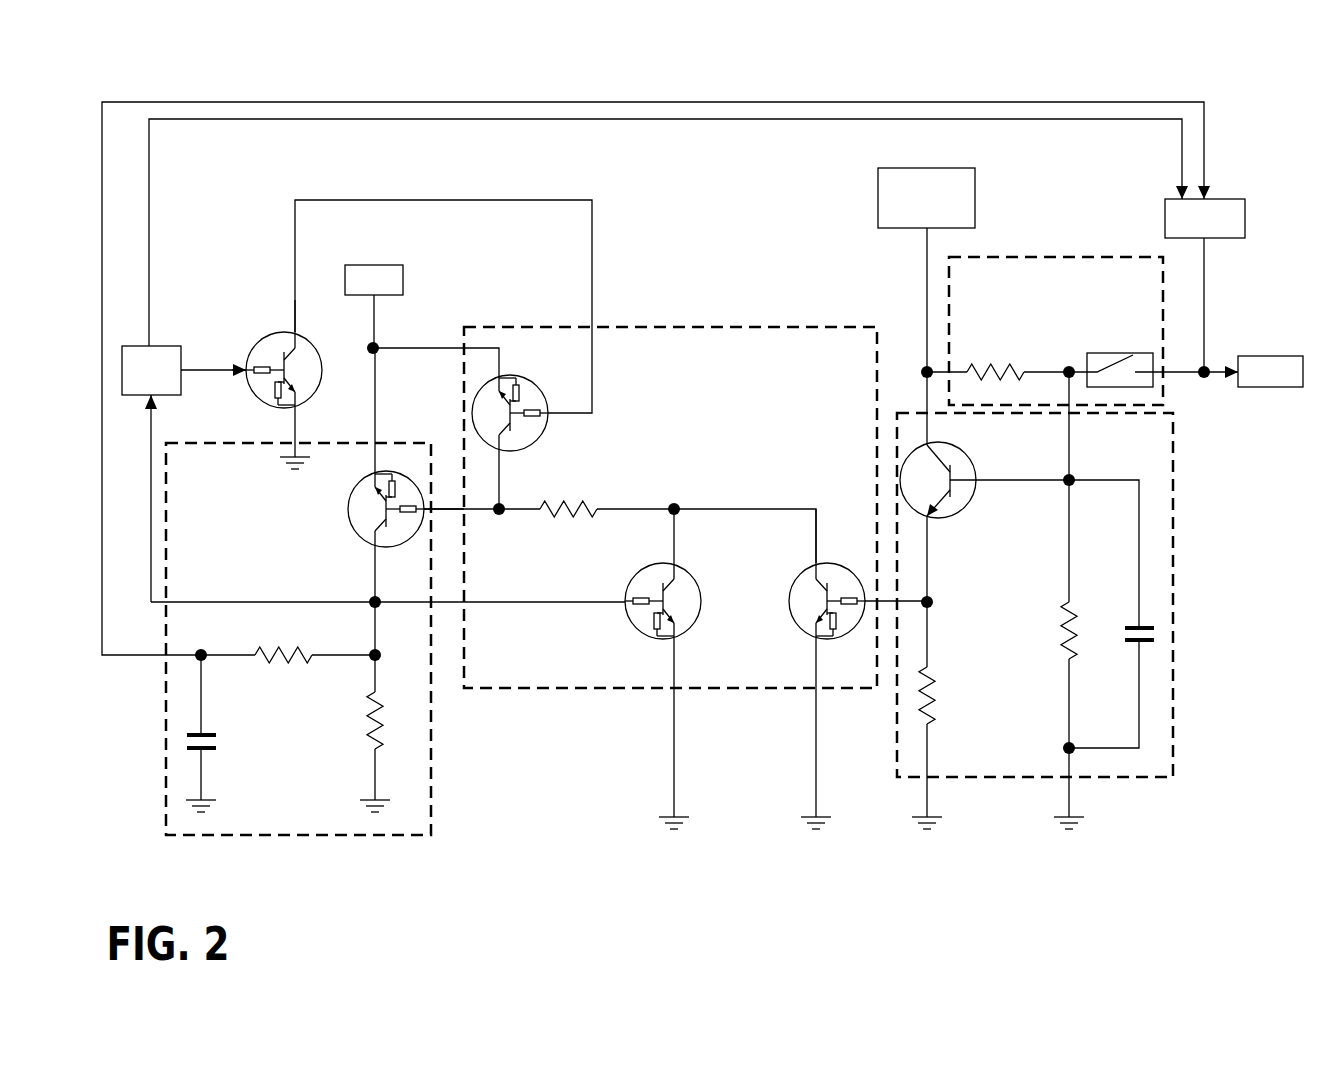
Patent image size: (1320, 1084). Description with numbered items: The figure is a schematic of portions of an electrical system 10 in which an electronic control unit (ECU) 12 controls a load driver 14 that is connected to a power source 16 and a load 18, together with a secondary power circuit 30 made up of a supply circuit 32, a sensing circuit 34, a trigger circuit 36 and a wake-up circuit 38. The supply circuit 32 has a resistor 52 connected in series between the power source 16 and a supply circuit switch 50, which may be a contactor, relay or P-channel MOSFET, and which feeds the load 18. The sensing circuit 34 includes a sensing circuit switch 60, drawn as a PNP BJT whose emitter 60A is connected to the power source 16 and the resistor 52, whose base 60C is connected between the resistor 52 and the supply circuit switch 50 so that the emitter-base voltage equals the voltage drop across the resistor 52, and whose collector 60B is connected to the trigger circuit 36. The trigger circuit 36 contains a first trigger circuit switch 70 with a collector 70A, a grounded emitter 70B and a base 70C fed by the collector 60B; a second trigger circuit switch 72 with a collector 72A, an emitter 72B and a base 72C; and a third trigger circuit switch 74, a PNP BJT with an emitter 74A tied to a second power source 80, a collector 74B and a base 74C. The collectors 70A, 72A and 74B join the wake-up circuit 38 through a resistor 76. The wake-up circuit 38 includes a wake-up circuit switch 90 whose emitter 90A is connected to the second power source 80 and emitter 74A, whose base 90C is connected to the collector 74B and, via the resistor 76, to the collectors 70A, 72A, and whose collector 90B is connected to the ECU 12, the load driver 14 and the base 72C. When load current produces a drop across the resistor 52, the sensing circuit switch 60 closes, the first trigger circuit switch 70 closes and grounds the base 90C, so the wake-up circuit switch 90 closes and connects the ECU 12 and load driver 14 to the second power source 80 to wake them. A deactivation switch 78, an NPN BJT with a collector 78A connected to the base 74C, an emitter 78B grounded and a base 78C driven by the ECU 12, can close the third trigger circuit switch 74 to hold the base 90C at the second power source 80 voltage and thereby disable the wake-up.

The electrical system 10 is at (178, 85).
The electronic control unit 12 is at (158, 345).
The load driver 14 is at (1228, 199).
The power source 16 is at (905, 168).
The load 18 is at (1262, 356).
The secondary power circuit 30 is at (1013, 830).
The supply circuit 32 is at (1003, 253).
The sensing circuit 34 is at (1130, 783).
The trigger circuit 36 is at (515, 695).
The wake-up circuit 38 is at (335, 843).
The supply circuit switch 50 is at (1123, 353).
The resistor 52 is at (1003, 360).
The sensing circuit switch 60 is at (984, 489).
The emitter 60A is at (940, 435).
The collector 60B is at (933, 525).
The base 60C is at (982, 488).
The first trigger circuit switch 70 is at (843, 642).
The collector 70A is at (820, 560).
The emitter 70B is at (820, 645).
The base 70C is at (865, 615).
The second trigger circuit switch 72 is at (454, 669).
The collector 72A is at (683, 565).
The emitter 72B is at (680, 640).
The base 72C is at (625, 598).
The third trigger circuit switch 74 is at (476, 354).
The emitter 74A is at (507, 375).
The collector 74B is at (508, 455).
The base 74C is at (552, 420).
The resistor 76 is at (565, 520).
The deactivation switch 78 is at (278, 353).
The collector 78A is at (292, 330).
The emitter 78B is at (305, 410).
The base 78C is at (243, 378).
The second power source 80 is at (375, 265).
The wake-up circuit switch 90 is at (368, 475).
The emitter 90A is at (380, 470).
The collector 90B is at (370, 545).
The base 90C is at (430, 505).